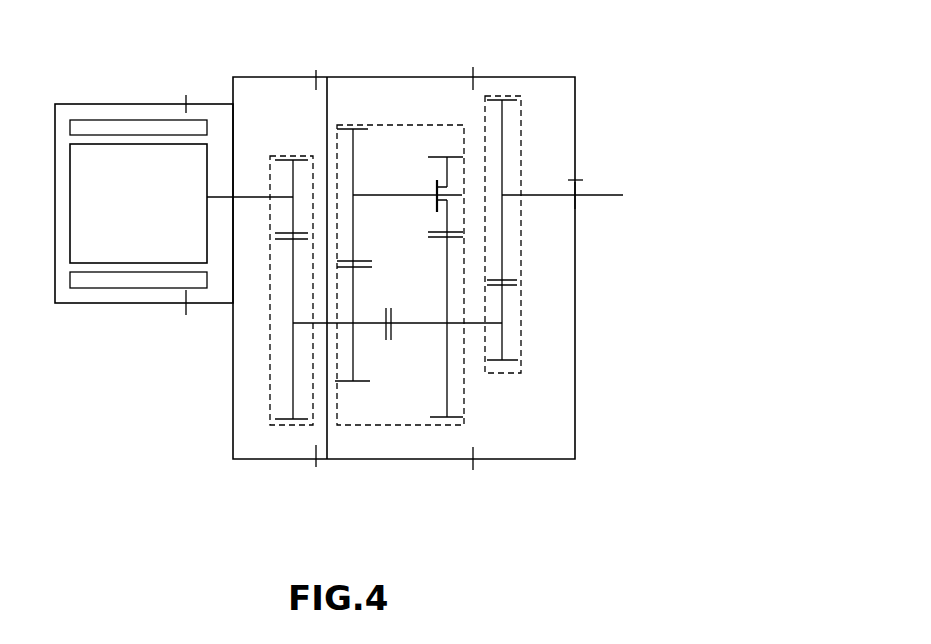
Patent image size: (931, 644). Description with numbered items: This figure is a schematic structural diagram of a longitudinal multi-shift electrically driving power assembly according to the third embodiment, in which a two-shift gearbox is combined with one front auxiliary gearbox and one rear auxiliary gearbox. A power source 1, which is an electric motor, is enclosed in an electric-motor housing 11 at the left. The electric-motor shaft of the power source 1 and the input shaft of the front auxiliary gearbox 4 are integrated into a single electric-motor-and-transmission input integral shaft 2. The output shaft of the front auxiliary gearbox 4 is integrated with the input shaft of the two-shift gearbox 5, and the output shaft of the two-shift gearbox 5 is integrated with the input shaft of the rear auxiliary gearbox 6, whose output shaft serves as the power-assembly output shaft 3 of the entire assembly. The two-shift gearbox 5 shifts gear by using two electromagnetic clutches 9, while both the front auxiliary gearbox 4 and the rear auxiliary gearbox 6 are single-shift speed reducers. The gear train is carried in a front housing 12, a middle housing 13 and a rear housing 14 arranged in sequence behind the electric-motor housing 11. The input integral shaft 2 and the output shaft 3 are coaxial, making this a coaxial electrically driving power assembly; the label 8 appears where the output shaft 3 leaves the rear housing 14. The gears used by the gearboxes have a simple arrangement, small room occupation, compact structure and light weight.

The power source 1 is at (182, 240).
The electric-motor-and-transmission input integral shaft 2 is at (256, 200).
The power-assembly output shaft 3 is at (615, 199).
The front auxiliary gearbox 4 is at (297, 154).
The two-shift gearbox 5 is at (437, 127).
The rear auxiliary gearbox 6 is at (498, 97).
The single-intermediate-shaft four-shift gearbox 8 is at (583, 209).
The electromagnetic clutches 9 is at (437, 190).
The electric-motor housing 11 is at (138, 303).
The front housing 12 is at (300, 460).
The middle housing 13 is at (408, 459).
The rear housing 14 is at (522, 459).